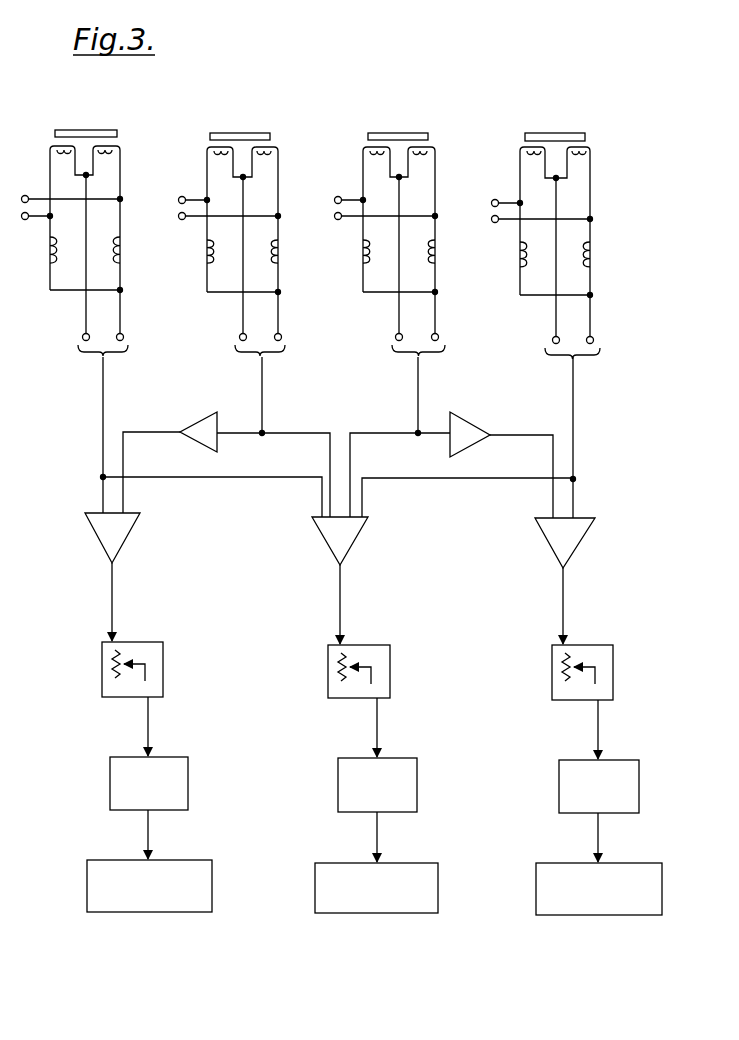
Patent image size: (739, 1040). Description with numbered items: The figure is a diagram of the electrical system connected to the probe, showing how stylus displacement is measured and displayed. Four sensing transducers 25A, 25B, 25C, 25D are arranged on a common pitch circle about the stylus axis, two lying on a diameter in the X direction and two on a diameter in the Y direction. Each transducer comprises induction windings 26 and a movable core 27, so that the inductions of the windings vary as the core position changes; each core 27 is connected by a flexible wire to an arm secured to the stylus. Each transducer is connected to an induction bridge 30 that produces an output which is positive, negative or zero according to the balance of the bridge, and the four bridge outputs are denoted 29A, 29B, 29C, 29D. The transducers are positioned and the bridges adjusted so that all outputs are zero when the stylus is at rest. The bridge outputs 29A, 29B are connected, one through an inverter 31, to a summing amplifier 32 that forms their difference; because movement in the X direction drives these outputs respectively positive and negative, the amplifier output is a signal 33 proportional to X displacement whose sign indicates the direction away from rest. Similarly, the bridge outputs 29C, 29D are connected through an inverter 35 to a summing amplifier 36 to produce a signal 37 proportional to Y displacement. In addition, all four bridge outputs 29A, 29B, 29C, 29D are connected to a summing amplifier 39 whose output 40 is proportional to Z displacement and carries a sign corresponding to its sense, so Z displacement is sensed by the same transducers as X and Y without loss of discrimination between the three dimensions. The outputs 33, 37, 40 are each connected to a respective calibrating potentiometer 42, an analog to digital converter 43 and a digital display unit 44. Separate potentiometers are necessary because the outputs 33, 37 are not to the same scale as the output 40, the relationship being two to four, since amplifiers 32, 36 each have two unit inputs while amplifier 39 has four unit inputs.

The sensing transducer 25A is at (84, 110).
The sensing transducer 25B is at (222, 120).
The sensing transducer 25C is at (382, 120).
The sensing transducer 25D is at (539, 121).
The induction windings 26 is at (121, 153).
The movable core 27 is at (93, 131).
The induction bridge 30 is at (127, 224).
The bridge output 29A is at (103, 412).
The bridge output 29B is at (262, 389).
The bridge output 29C is at (418, 385).
The bridge output 29D is at (573, 382).
The inverter 31 is at (206, 418).
The inverter 35 is at (476, 428).
The summing amplifier 32 is at (128, 541).
The summing amplifier 39 is at (356, 550).
The summing amplifier 36 is at (578, 548).
The X displacement signal 33 is at (113, 598).
The Z displacement output 40 is at (341, 609).
The Y displacement signal 37 is at (564, 612).
The calibrating potentiometer 42 is at (164, 666).
The analog to digital converter 43 is at (189, 775).
The digital display unit 44 is at (192, 862).